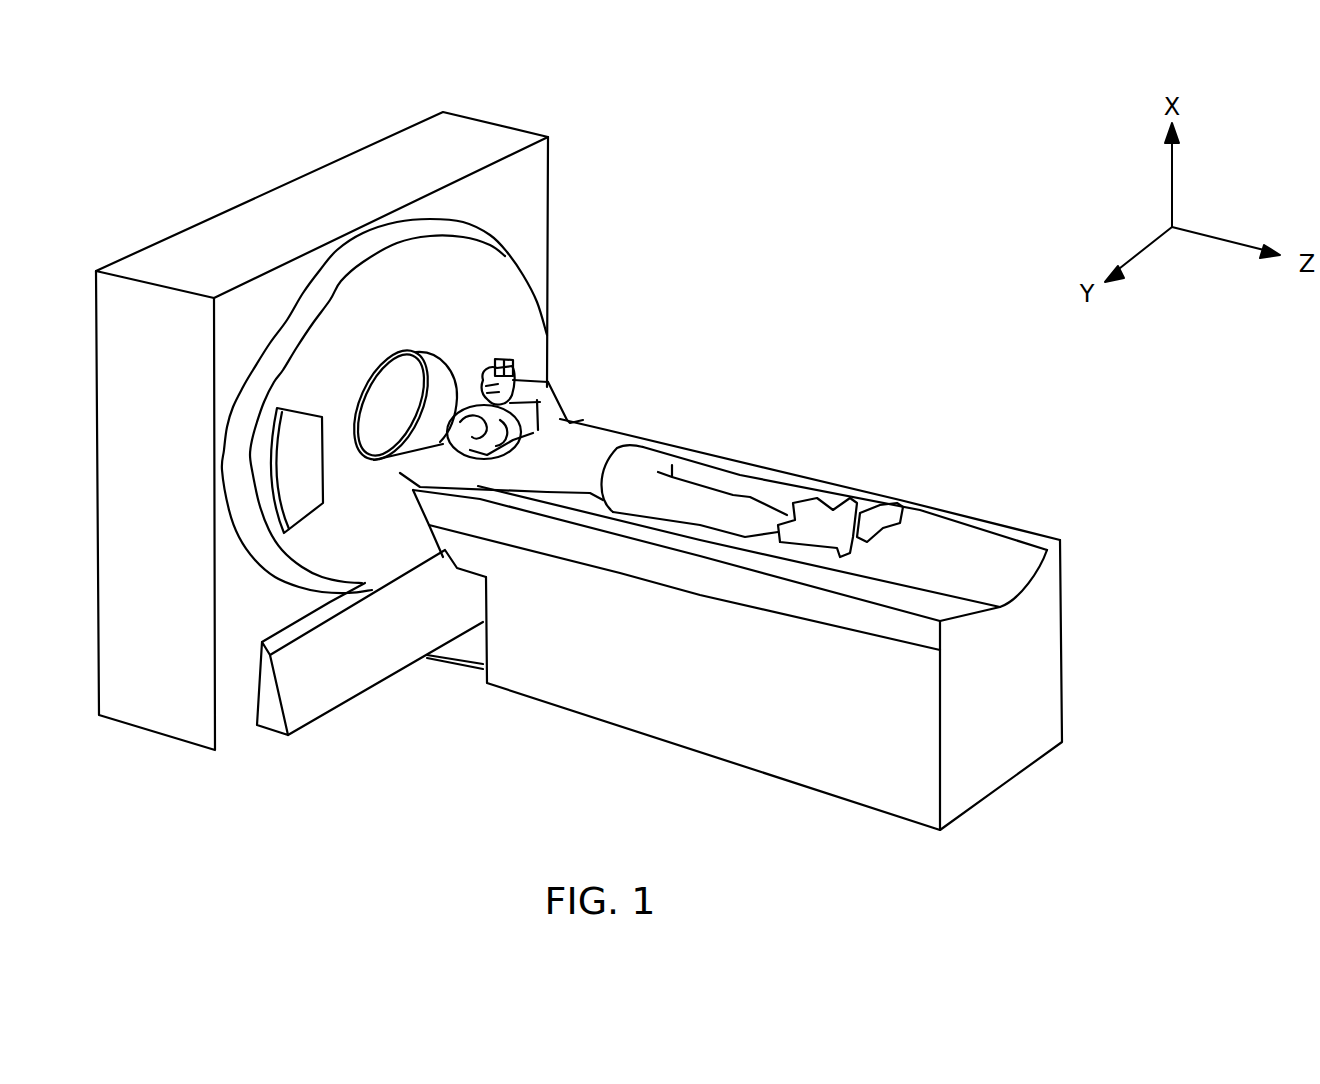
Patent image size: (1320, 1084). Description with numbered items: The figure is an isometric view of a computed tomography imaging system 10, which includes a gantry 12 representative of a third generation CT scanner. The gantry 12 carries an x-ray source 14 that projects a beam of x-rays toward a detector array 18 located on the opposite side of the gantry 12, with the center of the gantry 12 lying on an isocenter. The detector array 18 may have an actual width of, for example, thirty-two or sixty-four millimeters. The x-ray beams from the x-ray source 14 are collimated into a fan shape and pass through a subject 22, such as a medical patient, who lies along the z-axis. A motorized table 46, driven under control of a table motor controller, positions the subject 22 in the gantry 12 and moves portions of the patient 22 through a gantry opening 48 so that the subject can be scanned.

The computed tomography imaging system 10 is at (456, 676).
The gantry 12 is at (293, 172).
The x-ray source 14 is at (514, 377).
The detector array 18 is at (300, 507).
The subject 22 is at (605, 448).
The motorized table 46 is at (695, 752).
The gantry opening 48 is at (392, 393).